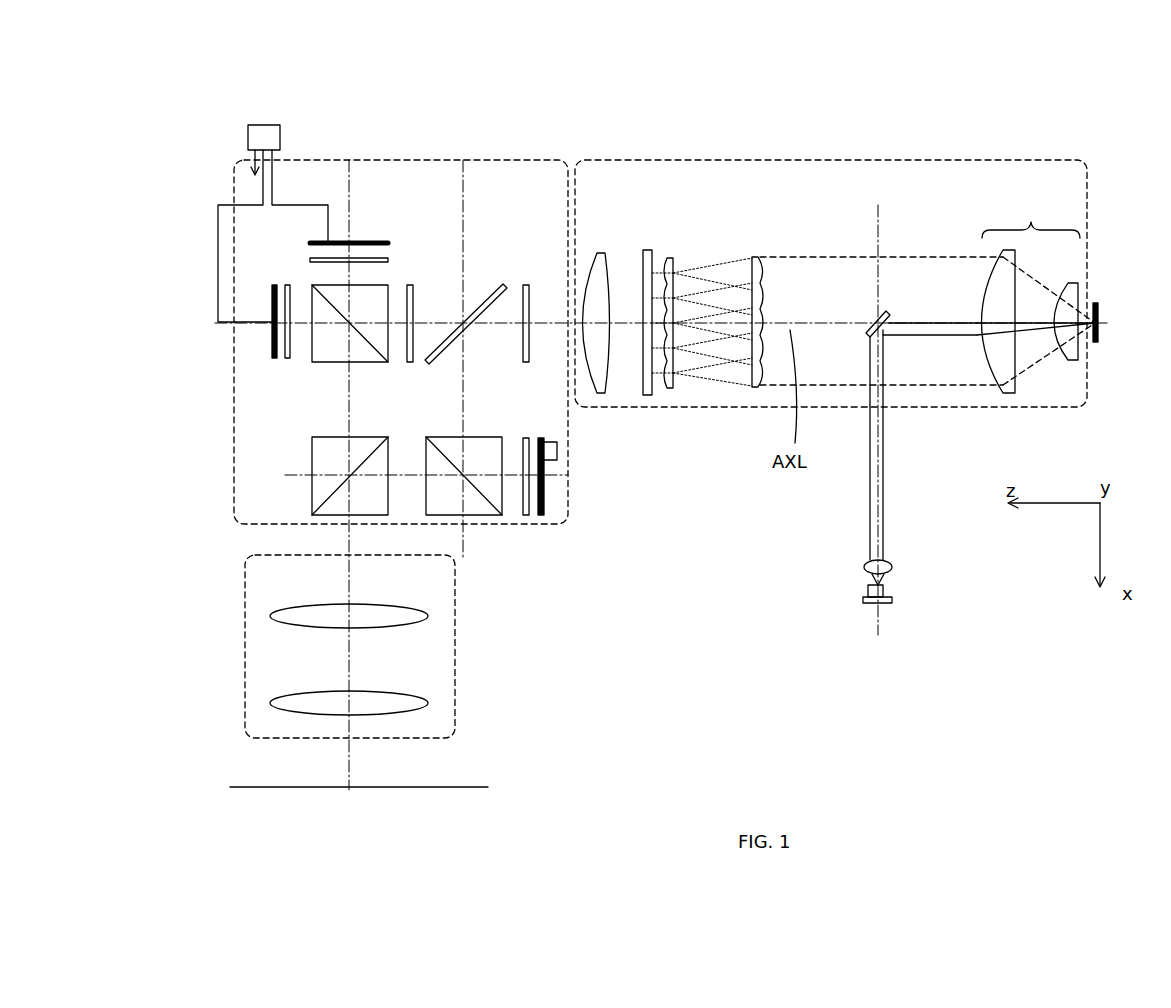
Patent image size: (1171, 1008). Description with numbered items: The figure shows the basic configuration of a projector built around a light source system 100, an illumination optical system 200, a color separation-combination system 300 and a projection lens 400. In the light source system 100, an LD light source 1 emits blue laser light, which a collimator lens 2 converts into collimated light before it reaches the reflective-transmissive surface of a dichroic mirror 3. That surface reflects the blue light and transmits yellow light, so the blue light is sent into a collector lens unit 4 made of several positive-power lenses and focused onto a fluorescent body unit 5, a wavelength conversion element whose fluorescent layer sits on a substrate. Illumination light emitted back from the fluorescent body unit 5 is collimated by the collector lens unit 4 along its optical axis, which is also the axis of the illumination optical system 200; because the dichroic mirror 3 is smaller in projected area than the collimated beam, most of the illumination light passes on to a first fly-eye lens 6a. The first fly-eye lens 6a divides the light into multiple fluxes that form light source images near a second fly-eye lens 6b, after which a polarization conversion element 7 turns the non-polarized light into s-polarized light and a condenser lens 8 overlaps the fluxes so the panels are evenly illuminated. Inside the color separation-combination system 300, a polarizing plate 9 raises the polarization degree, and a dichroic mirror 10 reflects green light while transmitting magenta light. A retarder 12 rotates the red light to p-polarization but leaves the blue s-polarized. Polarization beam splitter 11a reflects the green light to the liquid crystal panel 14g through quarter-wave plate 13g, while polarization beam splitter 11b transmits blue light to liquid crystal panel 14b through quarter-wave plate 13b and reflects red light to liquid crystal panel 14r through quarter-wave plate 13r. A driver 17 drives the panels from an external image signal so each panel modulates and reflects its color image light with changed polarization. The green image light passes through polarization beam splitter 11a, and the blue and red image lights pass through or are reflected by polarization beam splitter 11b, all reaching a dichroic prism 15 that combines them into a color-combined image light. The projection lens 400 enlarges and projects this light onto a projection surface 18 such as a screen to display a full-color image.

The LD light source 1 is at (885, 590).
The collimator lens 2 is at (885, 560).
The dichroic mirror 3 is at (870, 315).
The collector lens unit 4 is at (1031, 298).
The fluorescent body unit 5 is at (1098, 323).
The first fly-eye lens 6a is at (750, 280).
The second fly-eye lens 6b is at (685, 281).
The polarization conversion element 7 is at (658, 288).
The condenser lens 8 is at (607, 295).
The polarizing plate 9 is at (533, 300).
The dichroic mirror 10 is at (470, 282).
The polarization beam splitter 11a is at (465, 454).
The polarization beam splitter 11b is at (350, 341).
The retarder 12 is at (416, 295).
The quarter-wave plate 13b is at (316, 255).
The quarter-wave plate 13g is at (527, 449).
The quarter-wave plate 13r is at (298, 341).
The liquid crystal panel for blue 14b is at (319, 229).
The liquid crystal panel for green 14g is at (554, 441).
The liquid crystal panel for red 14r is at (261, 342).
The dichroic prism 15 is at (350, 451).
The driver 17 is at (292, 197).
The projection surface 18 is at (395, 768).
The light source system 100 is at (918, 477).
The illumination optical system 200 is at (831, 242).
The color separation-combination system 300 is at (401, 304).
The projection lens 400 is at (408, 646).